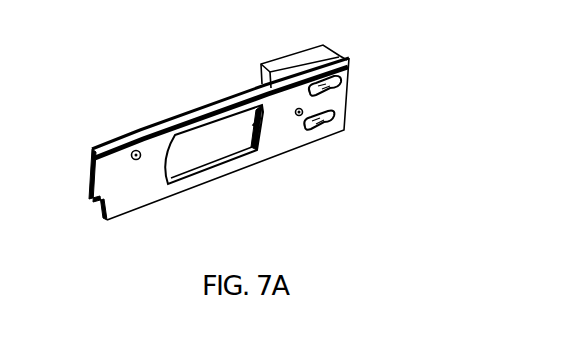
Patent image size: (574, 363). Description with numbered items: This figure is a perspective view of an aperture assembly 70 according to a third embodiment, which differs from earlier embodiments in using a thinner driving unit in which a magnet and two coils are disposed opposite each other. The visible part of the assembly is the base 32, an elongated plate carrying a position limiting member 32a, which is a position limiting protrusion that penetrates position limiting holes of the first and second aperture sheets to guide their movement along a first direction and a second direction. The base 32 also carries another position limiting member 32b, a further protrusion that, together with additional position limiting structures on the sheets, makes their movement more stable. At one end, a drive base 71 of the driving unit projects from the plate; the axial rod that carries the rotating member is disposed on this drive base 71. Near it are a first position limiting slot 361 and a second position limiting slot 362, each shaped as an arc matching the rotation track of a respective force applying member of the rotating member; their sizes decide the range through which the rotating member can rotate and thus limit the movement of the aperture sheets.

The aperture assembly 70 is at (130, 88).
The base 32 is at (226, 97).
The position limiting member 32a is at (136, 150).
The position limiting member 32b is at (299, 116).
The drive base 71 is at (322, 46).
The first position limiting slot 361 is at (333, 113).
The second position limiting slot 362 is at (337, 84).